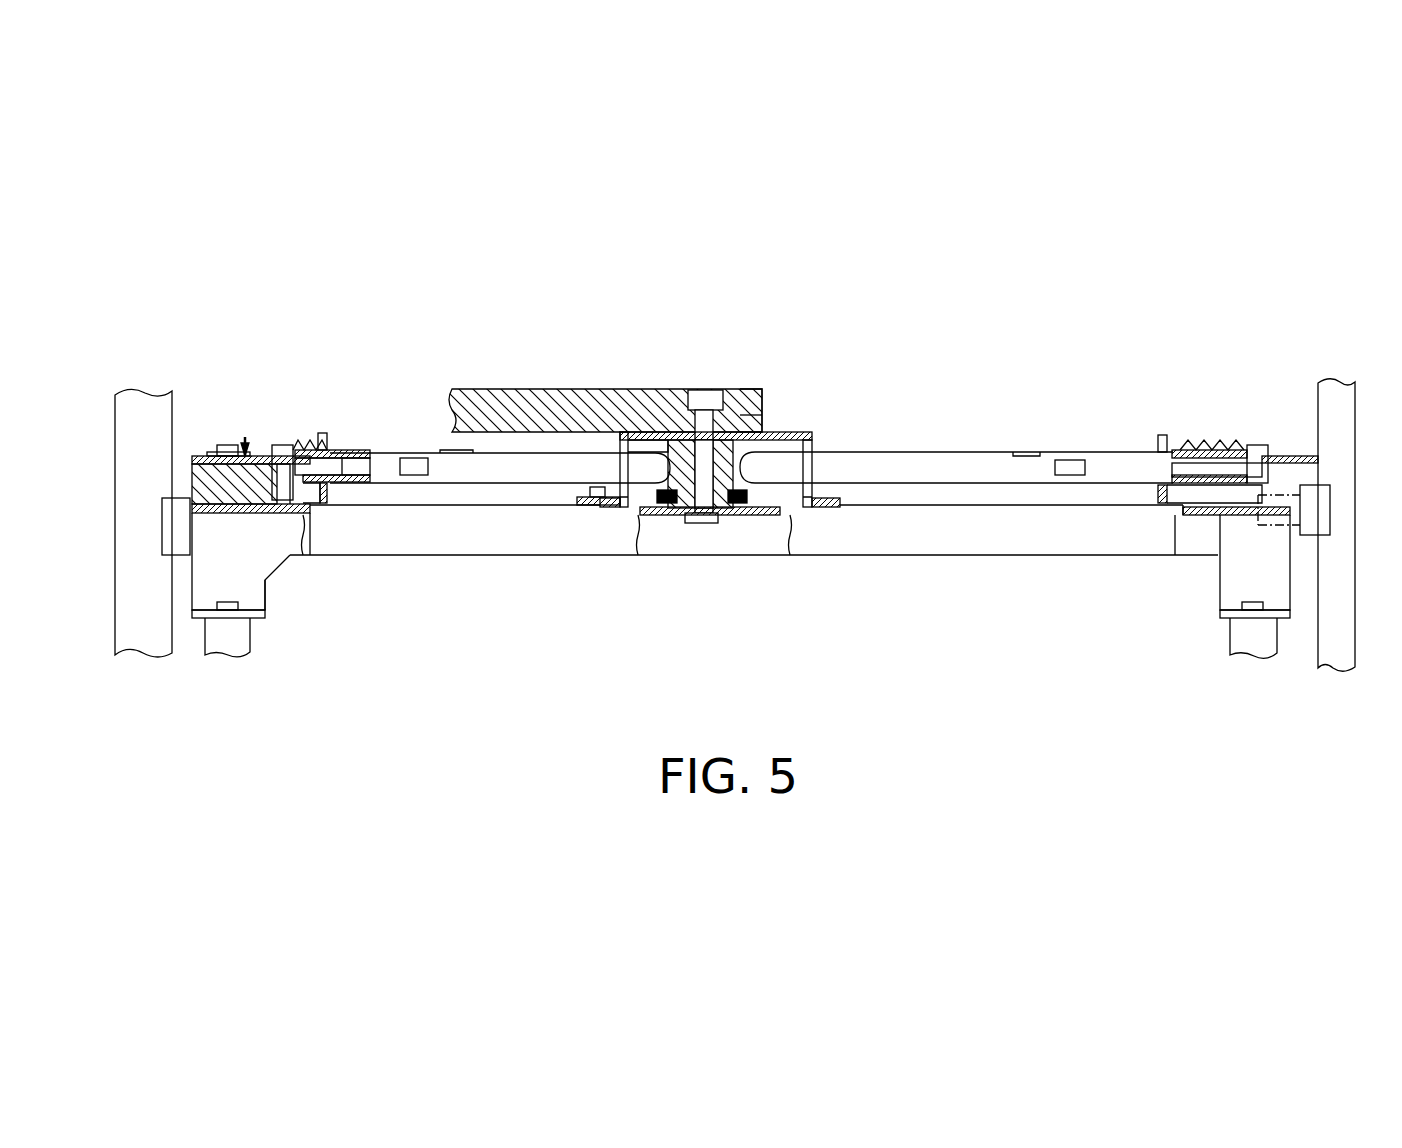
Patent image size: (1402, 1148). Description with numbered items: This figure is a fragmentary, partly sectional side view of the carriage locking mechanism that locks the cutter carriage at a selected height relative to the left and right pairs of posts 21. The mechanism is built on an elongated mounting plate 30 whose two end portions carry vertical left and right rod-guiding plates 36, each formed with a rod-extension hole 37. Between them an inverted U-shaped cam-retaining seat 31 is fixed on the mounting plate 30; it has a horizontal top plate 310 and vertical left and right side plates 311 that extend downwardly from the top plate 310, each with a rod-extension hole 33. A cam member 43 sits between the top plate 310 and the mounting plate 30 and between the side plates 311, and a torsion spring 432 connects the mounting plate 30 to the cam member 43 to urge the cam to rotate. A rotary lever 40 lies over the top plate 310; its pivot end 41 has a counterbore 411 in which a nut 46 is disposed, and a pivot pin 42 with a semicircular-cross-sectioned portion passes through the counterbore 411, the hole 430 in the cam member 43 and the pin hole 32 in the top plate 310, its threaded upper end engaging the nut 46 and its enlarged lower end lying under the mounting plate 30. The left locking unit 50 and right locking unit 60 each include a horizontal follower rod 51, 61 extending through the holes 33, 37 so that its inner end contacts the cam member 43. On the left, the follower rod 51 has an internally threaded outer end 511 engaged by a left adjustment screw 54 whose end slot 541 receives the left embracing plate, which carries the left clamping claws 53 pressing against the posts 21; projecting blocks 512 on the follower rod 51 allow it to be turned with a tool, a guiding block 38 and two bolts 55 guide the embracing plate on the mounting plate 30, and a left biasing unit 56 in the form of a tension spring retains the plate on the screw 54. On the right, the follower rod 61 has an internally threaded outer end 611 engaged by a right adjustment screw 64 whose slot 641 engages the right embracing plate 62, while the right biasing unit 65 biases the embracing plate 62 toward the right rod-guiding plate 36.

The posts 21 is at (140, 466).
The mounting plate 30 is at (590, 556).
The cam-retaining seat 31 is at (623, 432).
The pin hole 32 is at (683, 440).
The rod-extension hole 33 is at (622, 507).
The rod-guiding plate 36 is at (323, 507).
The rod-extension hole 37 is at (357, 500).
The guiding block 38 is at (205, 480).
The rotary lever 40 is at (593, 389).
The pivot end 41 is at (746, 389).
The pivot pin 42 is at (697, 525).
The cam member 43 is at (740, 515).
The nut 46 is at (700, 389).
The left locking unit 50 is at (245, 436).
The follower rod 51 is at (512, 465).
The left clamping claws 53 is at (168, 530).
The left adjustment screw 54 is at (288, 450).
The bolts 55 is at (223, 443).
The left biasing unit 56 is at (300, 447).
The right locking unit 60 is at (1232, 436).
The follower rod 61 is at (990, 468).
The right embracing plate 62 is at (1302, 485).
The right adjustment screw 64 is at (1247, 525).
The right biasing unit 65 is at (1193, 443).
The top plate 310 is at (797, 432).
The side plates 311 is at (812, 440).
The counterbore 411 is at (762, 413).
The hole 430 is at (660, 458).
The torsion spring 432 is at (657, 515).
The internally threaded outer end 511 is at (330, 465).
The projecting blocks 512 is at (413, 452).
The open-ended slot 541 is at (297, 502).
The internally threaded outer end 611 is at (1185, 515).
The open-ended slot 641 is at (1272, 452).